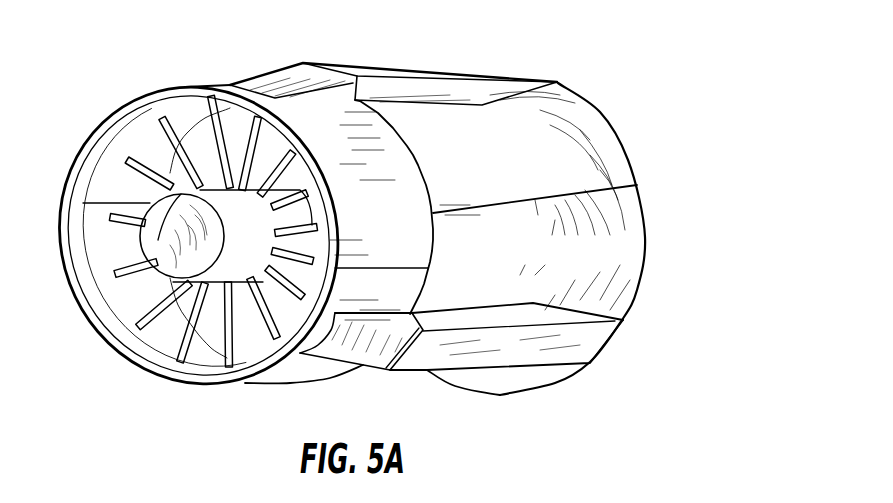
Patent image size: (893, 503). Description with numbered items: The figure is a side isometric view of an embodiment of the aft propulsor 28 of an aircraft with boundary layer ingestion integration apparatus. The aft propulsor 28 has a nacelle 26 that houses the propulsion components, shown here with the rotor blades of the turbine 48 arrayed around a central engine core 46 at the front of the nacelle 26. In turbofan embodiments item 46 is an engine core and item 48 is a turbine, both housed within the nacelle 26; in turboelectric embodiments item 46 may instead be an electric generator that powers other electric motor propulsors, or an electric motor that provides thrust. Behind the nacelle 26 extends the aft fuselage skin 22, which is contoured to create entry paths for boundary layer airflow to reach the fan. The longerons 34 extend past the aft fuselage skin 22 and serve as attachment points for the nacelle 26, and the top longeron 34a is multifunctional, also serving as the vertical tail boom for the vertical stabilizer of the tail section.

The aft fuselage skin 22 is at (510, 266).
The nacelle 26 is at (390, 230).
The aft propulsor 28 is at (103, 125).
The longerons 34 is at (483, 347).
The top longeron 34a is at (468, 73).
The engine core 46 is at (171, 257).
The turbine 48 is at (203, 108).